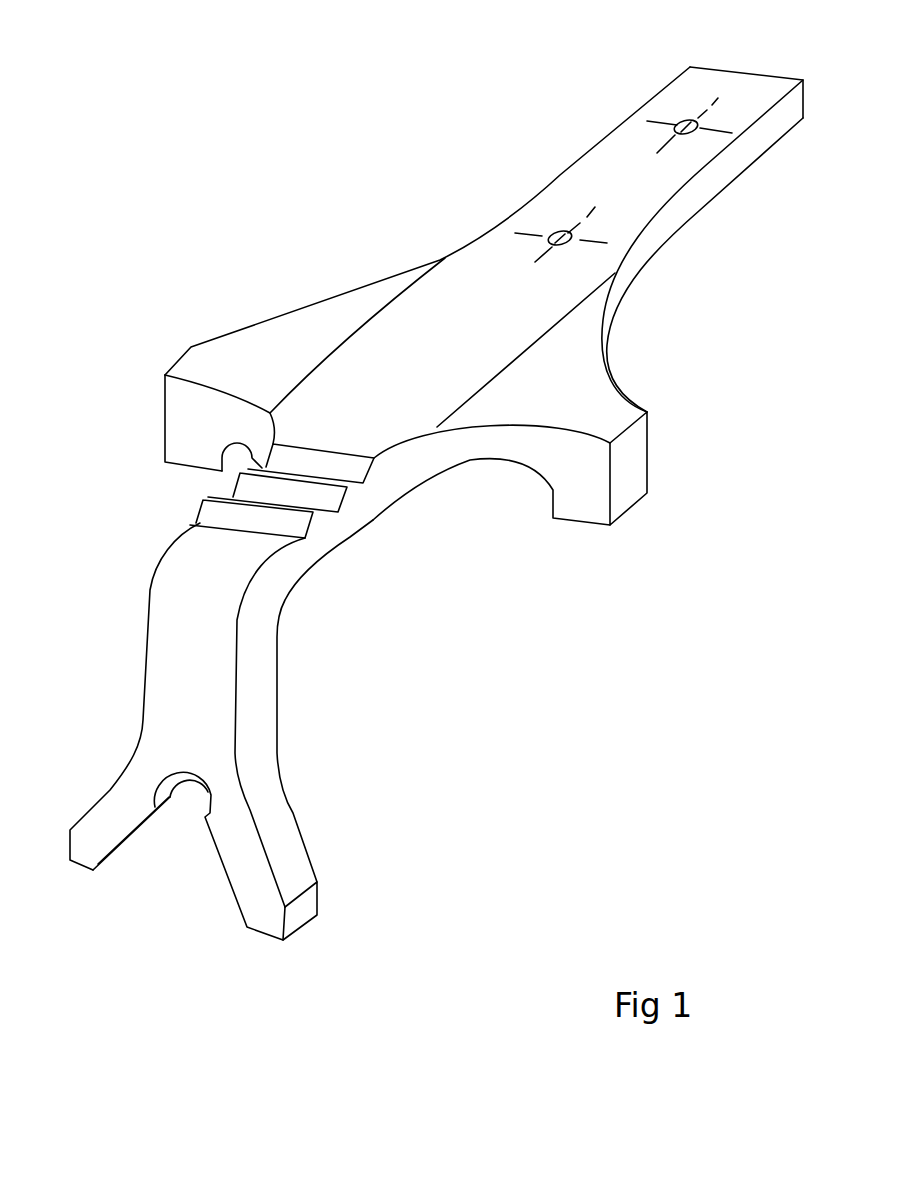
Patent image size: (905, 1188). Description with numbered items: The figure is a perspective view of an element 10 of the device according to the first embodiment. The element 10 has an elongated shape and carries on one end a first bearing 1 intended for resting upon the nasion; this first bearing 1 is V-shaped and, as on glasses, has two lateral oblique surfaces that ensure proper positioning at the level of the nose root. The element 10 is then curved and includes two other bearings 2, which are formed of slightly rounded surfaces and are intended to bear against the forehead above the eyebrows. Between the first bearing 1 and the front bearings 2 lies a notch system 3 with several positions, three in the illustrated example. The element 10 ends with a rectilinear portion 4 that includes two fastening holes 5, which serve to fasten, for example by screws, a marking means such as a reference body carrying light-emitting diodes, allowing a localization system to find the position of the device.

The element 10 is at (439, 474).
The rectilinear portion 4 is at (615, 155).
The fastening holes 5 is at (574, 236).
The bearings 2 is at (178, 482).
The notch system 3 is at (200, 507).
The first bearing 1 is at (290, 772).